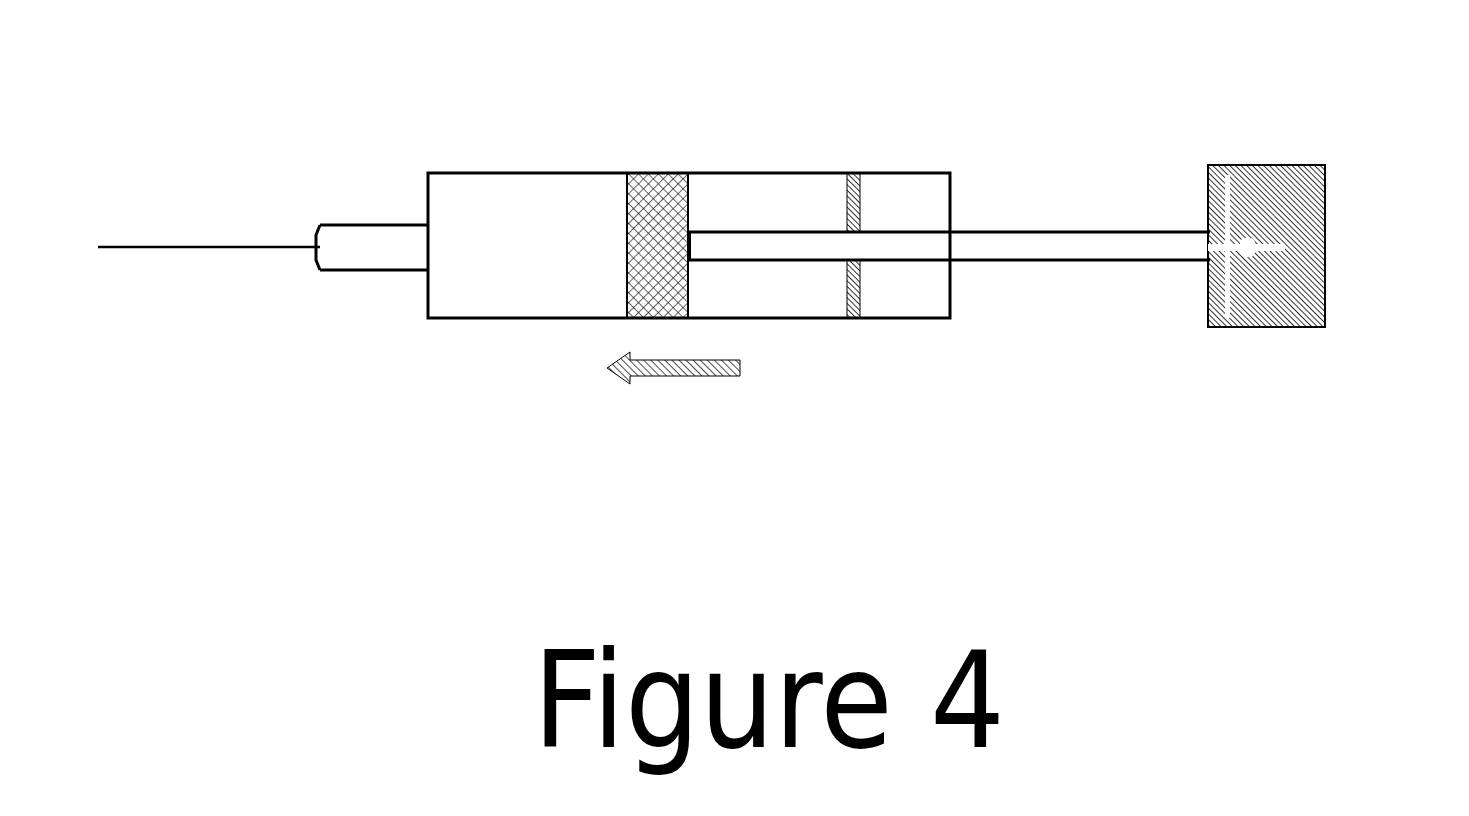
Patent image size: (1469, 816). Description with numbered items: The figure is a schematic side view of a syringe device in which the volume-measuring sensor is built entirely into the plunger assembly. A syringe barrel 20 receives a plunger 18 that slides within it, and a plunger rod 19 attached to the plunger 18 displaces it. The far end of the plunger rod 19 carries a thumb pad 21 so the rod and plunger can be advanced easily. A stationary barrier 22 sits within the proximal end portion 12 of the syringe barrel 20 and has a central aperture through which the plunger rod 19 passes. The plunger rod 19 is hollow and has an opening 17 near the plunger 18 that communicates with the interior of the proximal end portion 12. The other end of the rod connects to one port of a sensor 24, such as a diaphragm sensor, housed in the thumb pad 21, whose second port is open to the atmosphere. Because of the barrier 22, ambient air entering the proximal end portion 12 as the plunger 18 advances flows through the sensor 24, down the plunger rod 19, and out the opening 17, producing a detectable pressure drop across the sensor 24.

The proximal end portion 12 is at (802, 170).
The opening 17 is at (713, 227).
The plunger 18 is at (657, 175).
The plunger rod 19 is at (1085, 230).
The syringe barrel 20 is at (517, 175).
The thumb pad 21 is at (1275, 340).
The stationary barrier 22 is at (853, 340).
The sensor 24 is at (1325, 207).